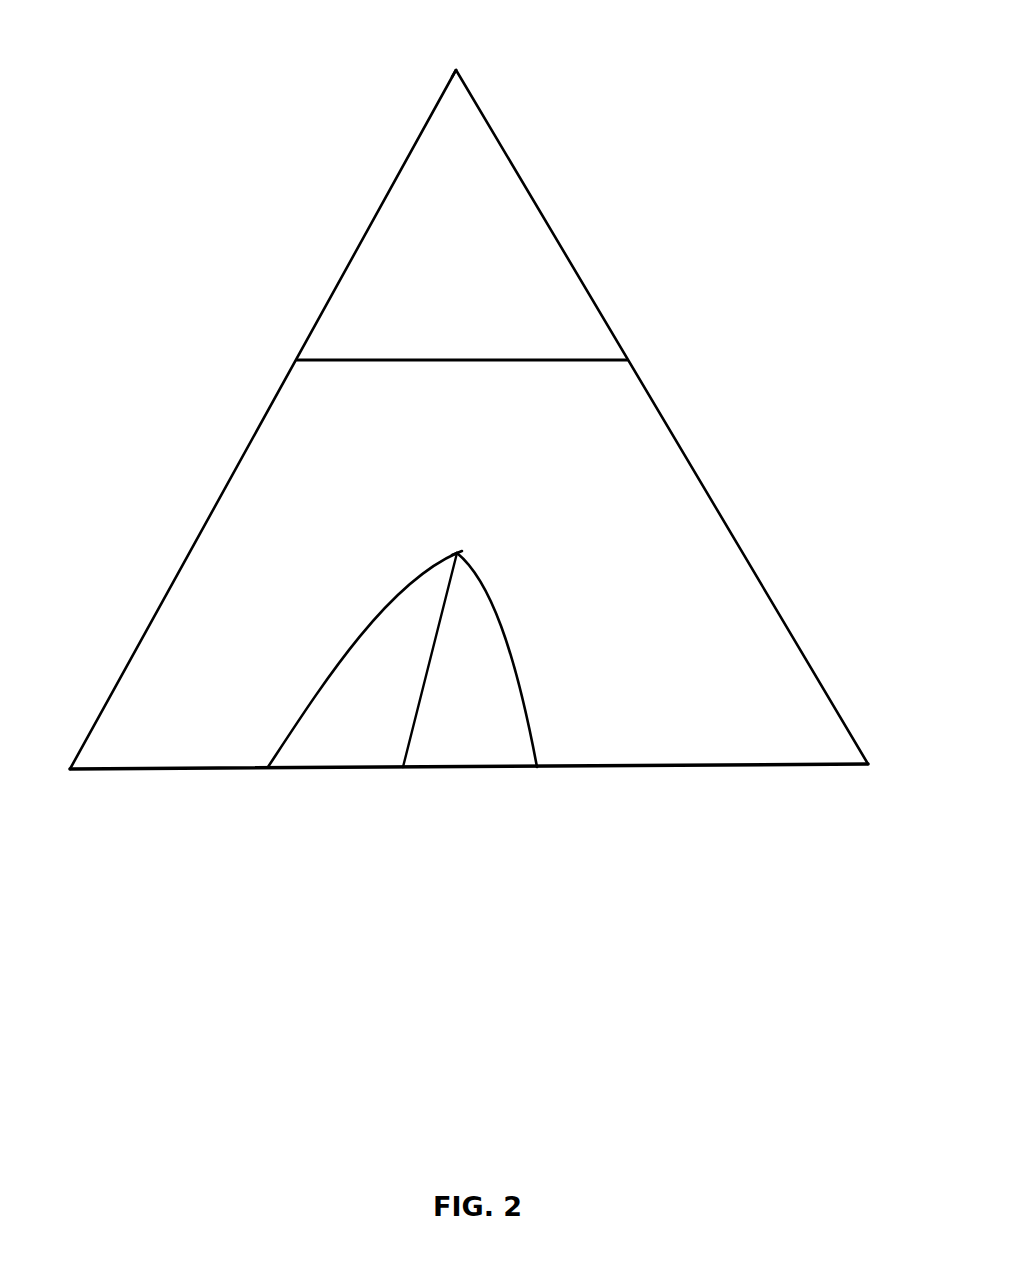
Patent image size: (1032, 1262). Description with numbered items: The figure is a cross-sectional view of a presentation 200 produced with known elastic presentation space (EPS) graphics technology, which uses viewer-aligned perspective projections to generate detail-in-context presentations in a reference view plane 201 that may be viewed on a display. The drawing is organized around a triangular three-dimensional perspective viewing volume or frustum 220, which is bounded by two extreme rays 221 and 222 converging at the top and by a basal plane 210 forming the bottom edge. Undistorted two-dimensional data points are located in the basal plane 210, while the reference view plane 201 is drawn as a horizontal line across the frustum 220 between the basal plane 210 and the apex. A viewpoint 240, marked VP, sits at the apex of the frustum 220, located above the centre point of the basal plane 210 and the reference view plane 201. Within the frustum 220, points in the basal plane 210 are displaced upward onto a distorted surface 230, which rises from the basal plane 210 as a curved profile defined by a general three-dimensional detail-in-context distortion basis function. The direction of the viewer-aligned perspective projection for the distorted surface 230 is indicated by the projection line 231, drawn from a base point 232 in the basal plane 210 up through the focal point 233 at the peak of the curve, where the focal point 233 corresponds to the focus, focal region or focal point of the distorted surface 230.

The presentation 200 is at (848, 188).
The reference view plane 201 is at (432, 361).
The basal plane 210 is at (655, 766).
The 3D perspective viewing volume or frustum 220 is at (768, 665).
The extreme ray 221 is at (725, 513).
The extreme ray 222 is at (200, 535).
The distorted surface 230 is at (515, 667).
The line FPo-FP 231 is at (418, 649).
The point FPo 232 is at (403, 768).
The point FP 233 is at (457, 553).
The viewpoint (VP) 240 is at (465, 69).